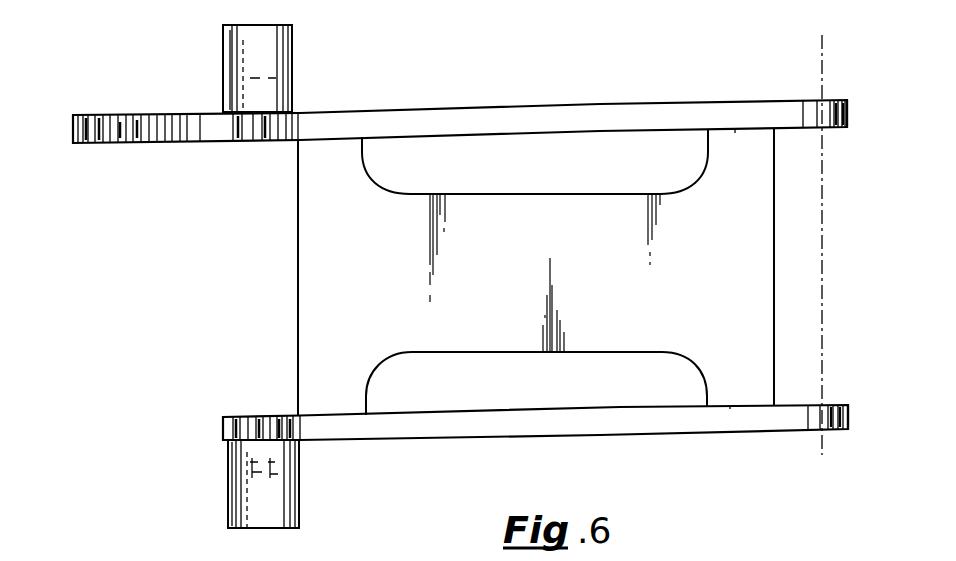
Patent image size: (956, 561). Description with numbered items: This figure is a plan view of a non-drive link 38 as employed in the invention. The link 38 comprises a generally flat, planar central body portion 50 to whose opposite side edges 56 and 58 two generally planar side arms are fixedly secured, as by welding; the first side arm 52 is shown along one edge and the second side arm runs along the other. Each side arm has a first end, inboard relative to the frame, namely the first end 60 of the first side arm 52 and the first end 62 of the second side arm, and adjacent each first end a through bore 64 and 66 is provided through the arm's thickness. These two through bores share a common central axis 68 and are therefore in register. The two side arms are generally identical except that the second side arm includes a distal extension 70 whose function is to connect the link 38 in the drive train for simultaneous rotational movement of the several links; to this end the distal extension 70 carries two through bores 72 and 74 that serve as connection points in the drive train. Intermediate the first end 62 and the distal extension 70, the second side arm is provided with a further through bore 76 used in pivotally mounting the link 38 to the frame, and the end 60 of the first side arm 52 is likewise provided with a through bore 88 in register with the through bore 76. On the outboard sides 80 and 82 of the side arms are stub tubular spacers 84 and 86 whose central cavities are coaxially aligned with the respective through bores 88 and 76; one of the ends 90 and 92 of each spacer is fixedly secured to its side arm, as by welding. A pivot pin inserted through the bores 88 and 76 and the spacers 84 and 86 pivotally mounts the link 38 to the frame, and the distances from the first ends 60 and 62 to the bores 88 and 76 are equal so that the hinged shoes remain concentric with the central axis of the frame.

The link 38 is at (446, 96).
The central body portion 50 is at (538, 265).
The first side arm 52 is at (518, 107).
The side edge 56 is at (732, 400).
The side edge 58 is at (735, 133).
The first end 60 is at (803, 430).
The first end 62 is at (793, 100).
The through bore 64 is at (838, 397).
The through bore 66 is at (832, 132).
The common central axis 68 is at (823, 52).
The distal extension 70 is at (183, 112).
The through bore 72 is at (173, 147).
The through bore 74 is at (100, 113).
The through bore 76 is at (257, 141).
The outboard side 80 is at (317, 442).
The outboard side 82 is at (312, 110).
The stub tubular spacer 84 is at (227, 497).
The stub tubular spacer 86 is at (222, 33).
The through bore 88 is at (265, 418).
The end of spacer 90 is at (227, 445).
The end of spacer 92 is at (222, 107).